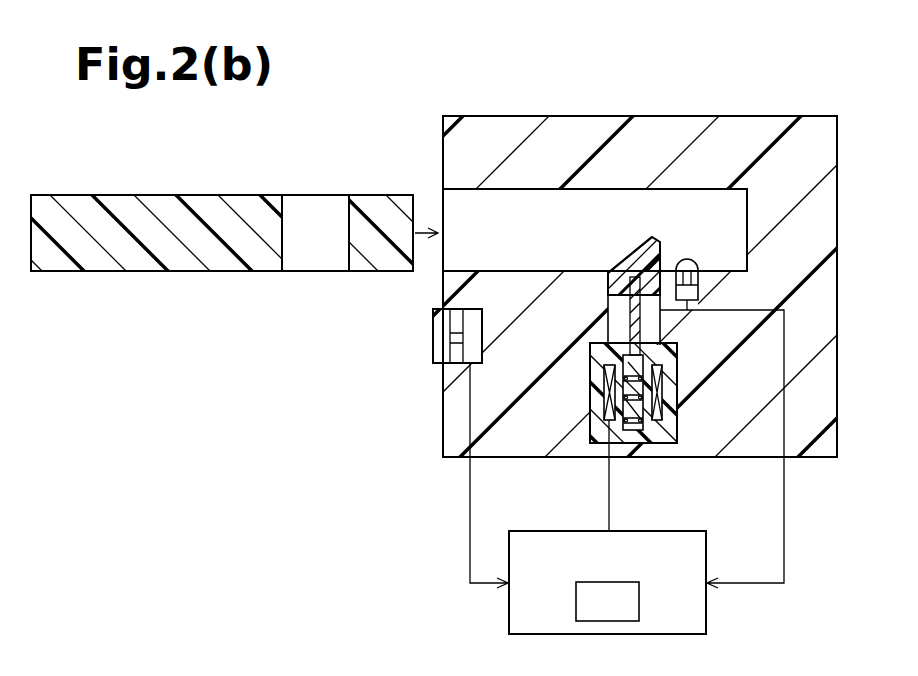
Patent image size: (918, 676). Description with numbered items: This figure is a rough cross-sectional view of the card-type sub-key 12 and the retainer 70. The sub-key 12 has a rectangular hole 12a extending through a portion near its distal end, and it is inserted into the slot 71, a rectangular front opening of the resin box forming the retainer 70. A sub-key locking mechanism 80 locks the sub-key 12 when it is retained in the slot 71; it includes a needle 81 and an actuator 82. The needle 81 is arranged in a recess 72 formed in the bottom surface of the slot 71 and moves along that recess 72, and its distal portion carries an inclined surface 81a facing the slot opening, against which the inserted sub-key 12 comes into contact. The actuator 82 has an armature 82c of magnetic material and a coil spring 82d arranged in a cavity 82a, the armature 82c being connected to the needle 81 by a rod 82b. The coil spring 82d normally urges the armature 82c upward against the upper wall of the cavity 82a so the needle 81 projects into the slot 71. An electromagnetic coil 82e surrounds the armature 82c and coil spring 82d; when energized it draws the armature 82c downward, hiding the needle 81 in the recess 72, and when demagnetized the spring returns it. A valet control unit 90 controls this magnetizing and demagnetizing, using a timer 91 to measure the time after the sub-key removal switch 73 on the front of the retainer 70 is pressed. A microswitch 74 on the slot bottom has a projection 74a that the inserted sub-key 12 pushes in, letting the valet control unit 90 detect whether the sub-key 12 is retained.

The sub-key 12 is at (118, 194).
The rectangular hole 12a is at (291, 203).
The retainer 70 is at (777, 95).
The slot 71 is at (466, 201).
The recess 72 is at (608, 325).
The sub-key removal switch 73 is at (433, 352).
The microswitch 74 is at (711, 296).
The projection 74a is at (687, 263).
The sub-key locking mechanism 80 is at (562, 429).
The needle 81 is at (660, 252).
The inclined surface 81a is at (627, 258).
The actuator 82 is at (676, 380).
The cavity 82a is at (632, 446).
The rod 82b is at (648, 350).
The armature 82c is at (594, 349).
The coil spring 82d is at (646, 401).
The electromagnetic coil 82e is at (604, 400).
The valet control unit 90 is at (571, 531).
The timer 91 is at (640, 601).